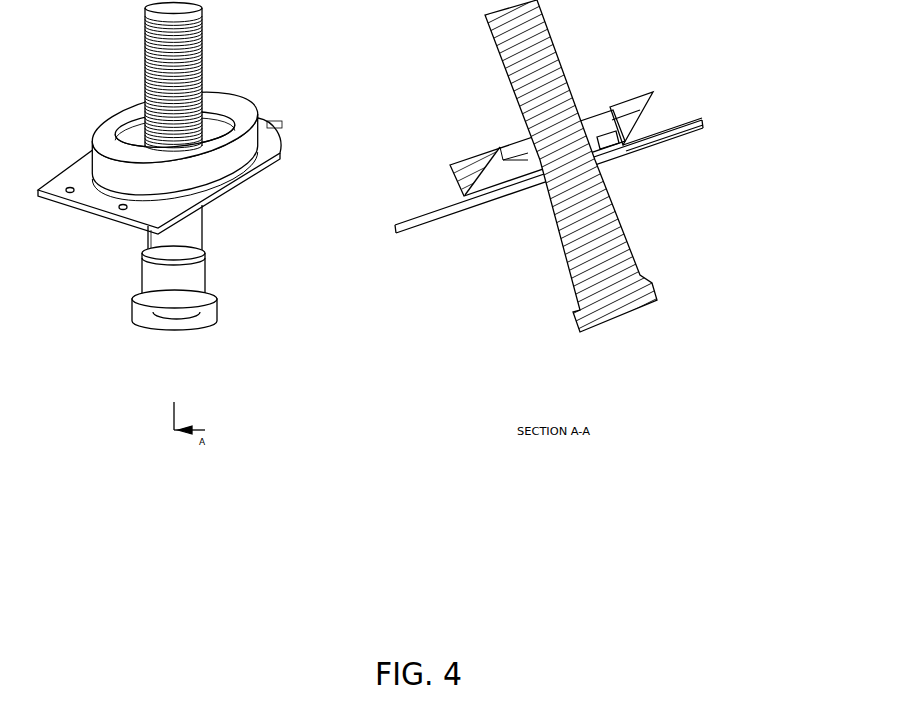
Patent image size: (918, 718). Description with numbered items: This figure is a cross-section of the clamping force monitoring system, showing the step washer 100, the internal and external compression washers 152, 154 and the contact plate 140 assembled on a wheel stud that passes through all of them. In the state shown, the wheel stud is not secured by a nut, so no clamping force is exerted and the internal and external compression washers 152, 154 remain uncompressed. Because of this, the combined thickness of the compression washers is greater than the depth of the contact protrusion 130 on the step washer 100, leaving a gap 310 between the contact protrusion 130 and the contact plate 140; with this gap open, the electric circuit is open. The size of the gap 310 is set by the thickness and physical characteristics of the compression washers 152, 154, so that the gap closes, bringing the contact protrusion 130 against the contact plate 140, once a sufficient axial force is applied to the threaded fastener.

The step washer 100 is at (458, 160).
The contact protrusion 130 is at (625, 143).
The contact plate 140 is at (625, 147).
The internal compression washer 152 is at (622, 145).
The external compression washer 154 is at (667, 127).
The gap 310 is at (507, 185).